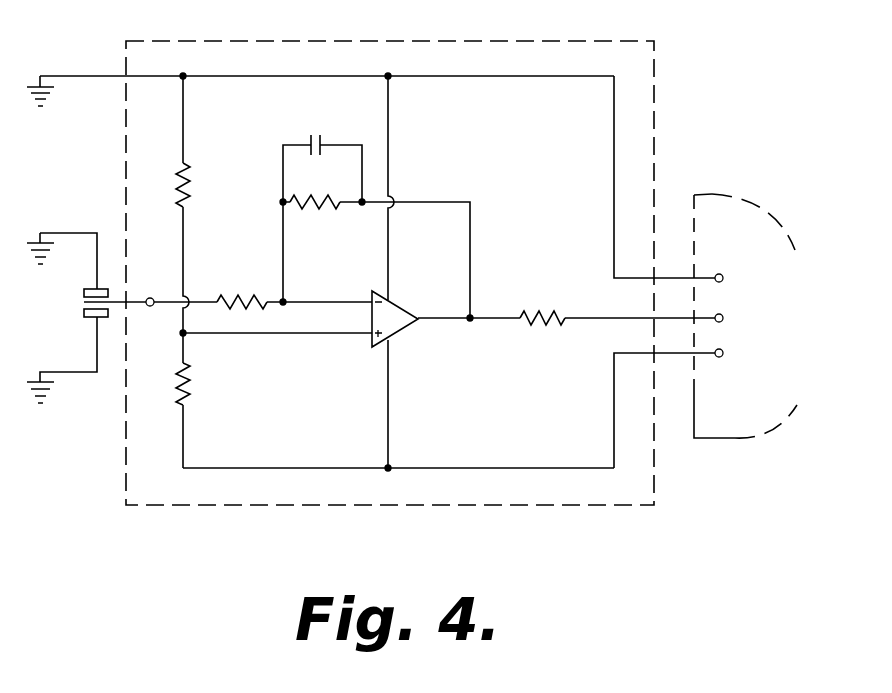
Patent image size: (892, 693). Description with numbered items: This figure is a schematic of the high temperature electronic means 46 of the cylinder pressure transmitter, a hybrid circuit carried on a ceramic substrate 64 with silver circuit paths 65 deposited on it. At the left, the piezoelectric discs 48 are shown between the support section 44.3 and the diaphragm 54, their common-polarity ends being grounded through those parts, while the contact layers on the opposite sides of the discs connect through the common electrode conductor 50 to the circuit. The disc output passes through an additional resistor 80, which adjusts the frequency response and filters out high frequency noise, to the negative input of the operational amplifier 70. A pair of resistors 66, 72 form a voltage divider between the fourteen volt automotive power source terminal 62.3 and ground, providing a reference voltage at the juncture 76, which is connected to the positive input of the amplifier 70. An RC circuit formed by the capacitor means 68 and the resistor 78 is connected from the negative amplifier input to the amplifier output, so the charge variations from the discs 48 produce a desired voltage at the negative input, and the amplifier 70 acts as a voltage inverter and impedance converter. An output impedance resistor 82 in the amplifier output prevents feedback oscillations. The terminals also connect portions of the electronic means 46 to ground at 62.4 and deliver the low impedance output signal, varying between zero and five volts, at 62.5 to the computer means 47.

The support section 44.3 is at (100, 283).
The electronic means 46 is at (667, 63).
The computer means 47 is at (757, 177).
The piezoelectric discs 48 is at (84, 292).
The common electrode conductor 50 is at (128, 300).
The diaphragm 54 is at (93, 322).
The automotive power source terminal 62.3 is at (723, 353).
The ground terminal 62.4 is at (723, 278).
The output terminal 62.5 is at (723, 318).
The substrate 64 is at (125, 496).
The circuit paths 65 is at (607, 320).
The resistor 66 is at (190, 178).
The capacitor means 68 is at (318, 143).
The operational amplifier 70 is at (396, 303).
The resistor 72 is at (190, 385).
The juncture 76 is at (183, 333).
The resistor 78 is at (316, 212).
The additional resistor 80 is at (262, 273).
The output impedance resistor 82 is at (570, 279).